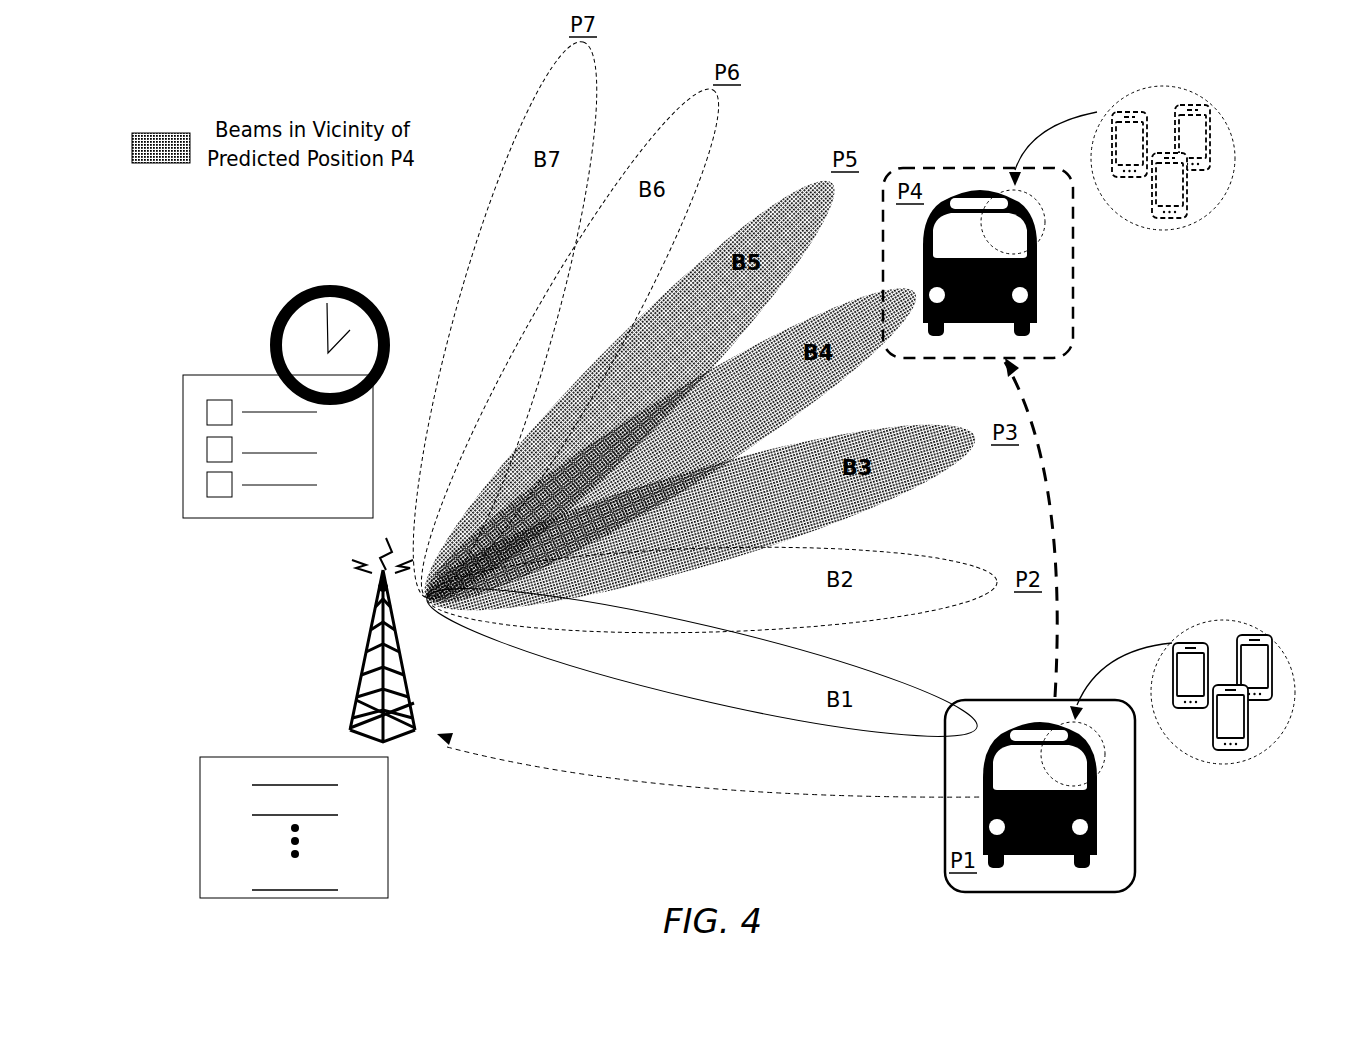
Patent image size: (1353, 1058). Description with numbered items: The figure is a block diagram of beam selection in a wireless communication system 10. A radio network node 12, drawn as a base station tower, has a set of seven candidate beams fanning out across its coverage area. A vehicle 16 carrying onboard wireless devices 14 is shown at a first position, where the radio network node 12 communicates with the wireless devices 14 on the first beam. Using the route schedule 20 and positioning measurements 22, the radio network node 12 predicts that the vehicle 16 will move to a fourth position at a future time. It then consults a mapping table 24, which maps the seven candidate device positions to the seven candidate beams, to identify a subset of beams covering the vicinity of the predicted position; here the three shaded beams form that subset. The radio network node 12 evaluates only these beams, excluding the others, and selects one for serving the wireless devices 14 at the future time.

The wireless communication system 10 is at (376, 264).
The radio network node 12 is at (362, 656).
The wireless devices 14 is at (1227, 193).
The vehicle 16 is at (1038, 288).
The route schedule 20 is at (240, 375).
The positioning measurements 22 is at (497, 760).
The mapping table 24 is at (248, 758).